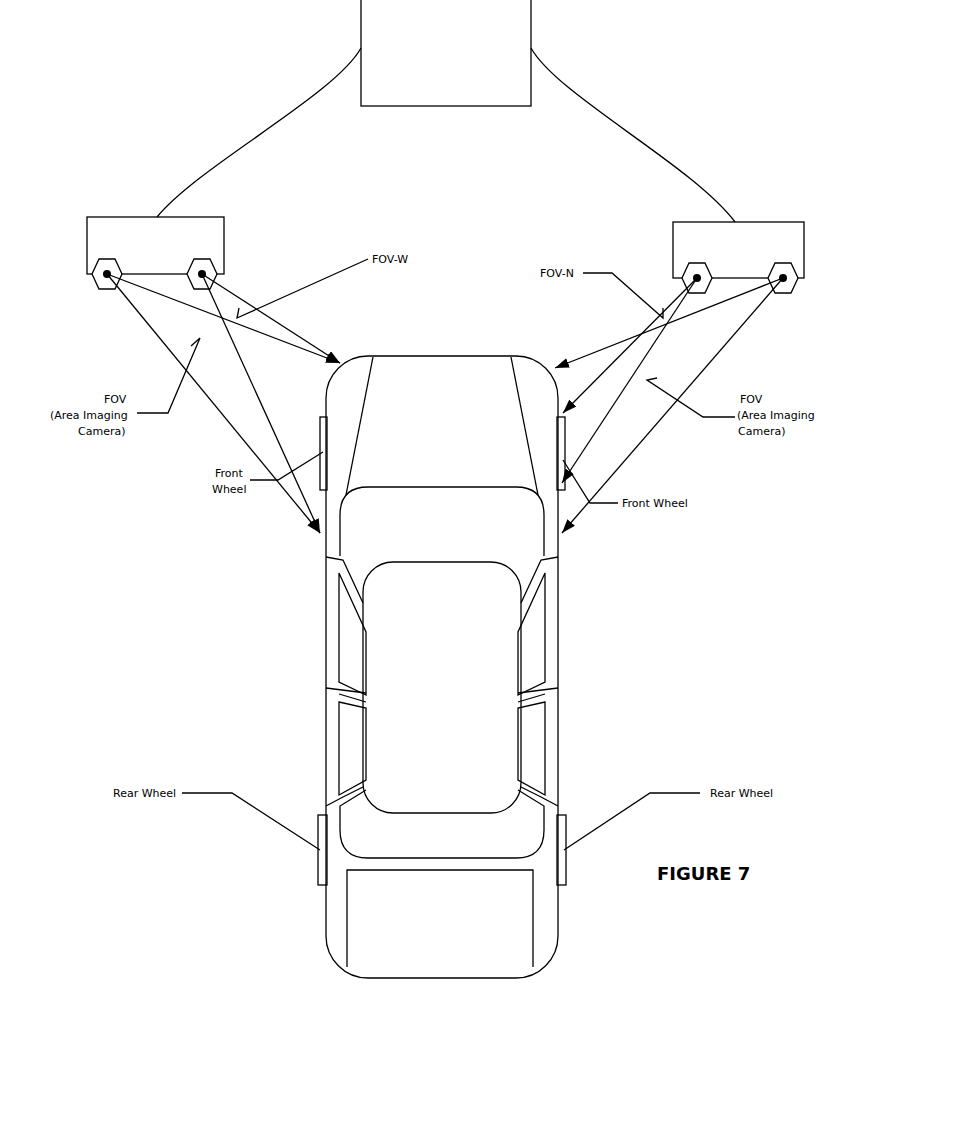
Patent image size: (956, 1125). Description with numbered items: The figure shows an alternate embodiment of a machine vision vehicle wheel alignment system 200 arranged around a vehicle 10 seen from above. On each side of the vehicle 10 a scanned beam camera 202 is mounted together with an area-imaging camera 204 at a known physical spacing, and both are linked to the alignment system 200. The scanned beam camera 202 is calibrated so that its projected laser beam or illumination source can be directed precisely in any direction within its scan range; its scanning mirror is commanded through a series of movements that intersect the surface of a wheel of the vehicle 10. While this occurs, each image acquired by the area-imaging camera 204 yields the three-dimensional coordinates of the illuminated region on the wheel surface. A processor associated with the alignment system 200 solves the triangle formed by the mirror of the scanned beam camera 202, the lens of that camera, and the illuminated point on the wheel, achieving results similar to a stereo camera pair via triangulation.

The vehicle wheel alignment system 200 is at (446, 111).
The scanned beam camera 202 is at (209, 270).
The area-imaging camera 204 is at (106, 282).
The vehicle 10 is at (452, 679).